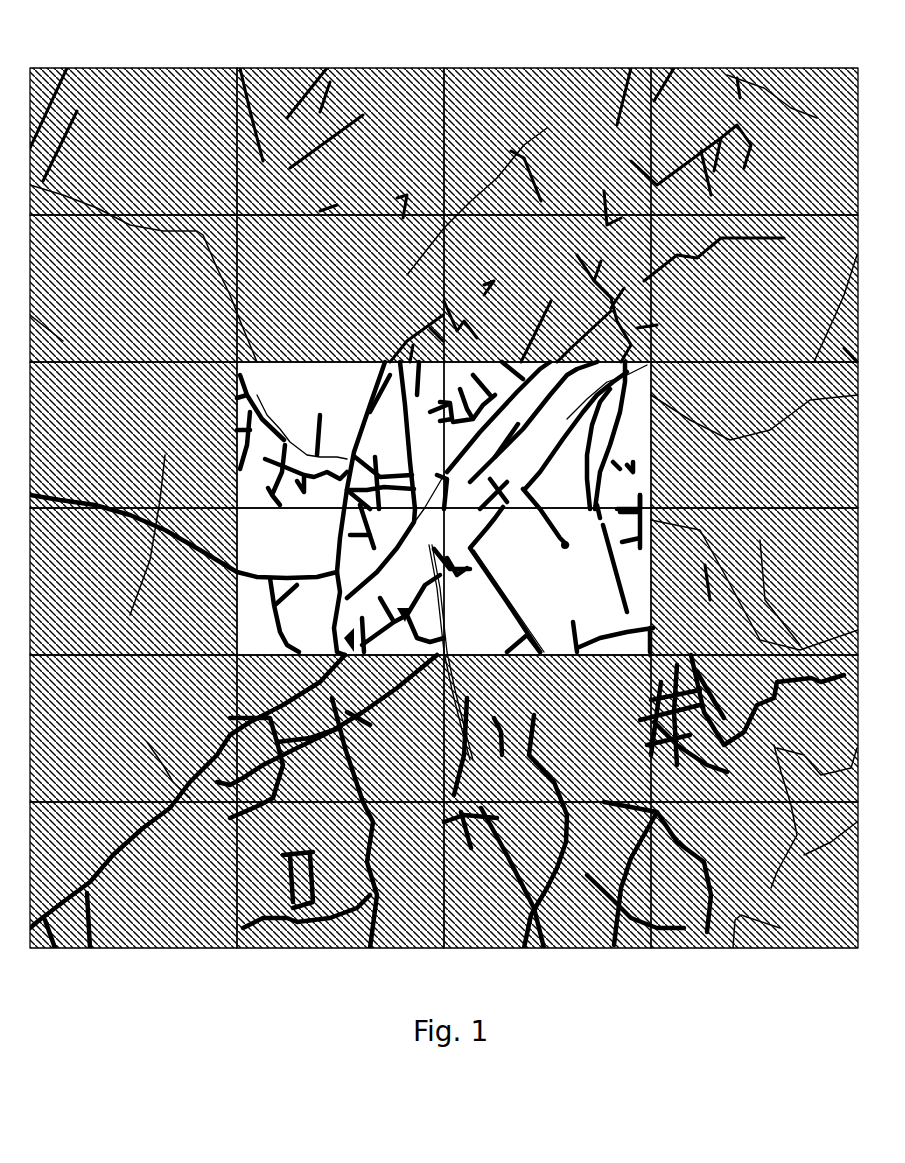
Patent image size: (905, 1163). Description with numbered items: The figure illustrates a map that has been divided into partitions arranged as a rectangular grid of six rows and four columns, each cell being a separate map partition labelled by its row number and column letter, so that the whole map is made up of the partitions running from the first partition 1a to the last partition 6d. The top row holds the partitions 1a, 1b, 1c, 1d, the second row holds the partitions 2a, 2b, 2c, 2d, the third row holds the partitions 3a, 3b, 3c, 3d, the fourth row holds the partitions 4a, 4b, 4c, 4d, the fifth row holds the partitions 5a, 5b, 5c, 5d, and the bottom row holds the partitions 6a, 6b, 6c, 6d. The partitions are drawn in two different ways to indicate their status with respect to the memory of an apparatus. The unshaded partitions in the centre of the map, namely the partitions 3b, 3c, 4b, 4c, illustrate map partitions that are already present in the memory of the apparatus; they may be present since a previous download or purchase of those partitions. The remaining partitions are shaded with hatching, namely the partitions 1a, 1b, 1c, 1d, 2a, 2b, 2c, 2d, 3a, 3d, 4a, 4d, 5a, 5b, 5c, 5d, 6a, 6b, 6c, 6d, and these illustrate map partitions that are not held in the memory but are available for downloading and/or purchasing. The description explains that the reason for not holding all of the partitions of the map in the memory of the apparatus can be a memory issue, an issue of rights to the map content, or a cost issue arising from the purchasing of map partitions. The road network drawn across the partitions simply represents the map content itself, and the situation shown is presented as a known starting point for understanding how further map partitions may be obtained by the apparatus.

The map partition 1a is at (133, 141).
The map partition 1b is at (340, 141).
The map partition 1c is at (547, 141).
The map partition 1d is at (754, 141).
The map partition 2a is at (133, 288).
The map partition 2b is at (340, 288).
The map partition 2c is at (547, 288).
The map partition 2d is at (754, 288).
The map partition 3a is at (133, 435).
The map partition 3b is at (340, 435).
The map partition 3c is at (547, 435).
The map partition 3d is at (754, 435).
The map partition 4a is at (133, 581).
The map partition 4b is at (340, 581).
The map partition 4c is at (547, 581).
The map partition 4d is at (754, 581).
The map partition 5a is at (133, 728).
The map partition 5b is at (340, 728).
The map partition 5c is at (547, 728).
The map partition 5d is at (754, 728).
The map partition 6a is at (133, 875).
The map partition 6b is at (340, 875).
The map partition 6c is at (547, 875).
The map partition 6d is at (754, 875).